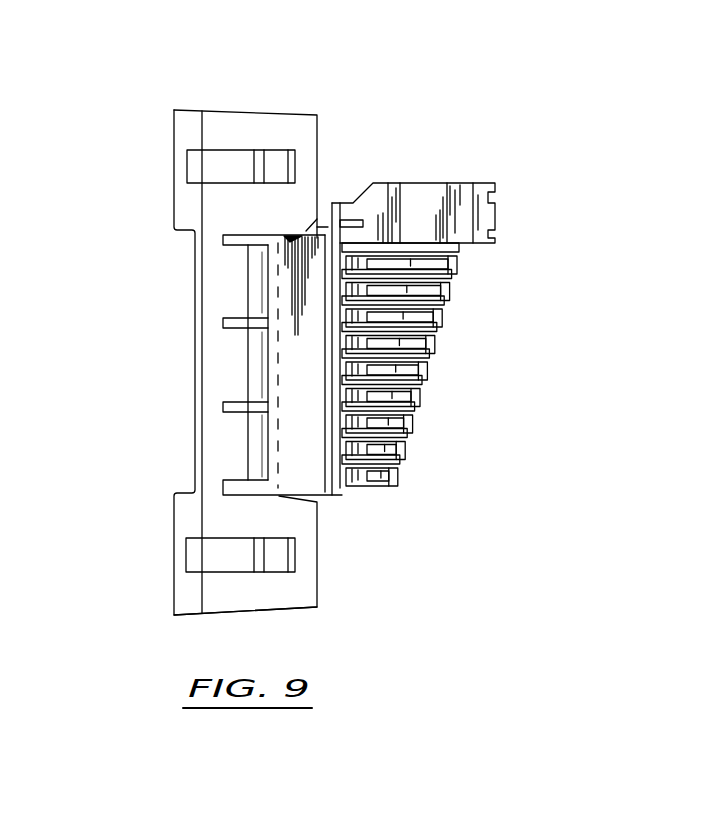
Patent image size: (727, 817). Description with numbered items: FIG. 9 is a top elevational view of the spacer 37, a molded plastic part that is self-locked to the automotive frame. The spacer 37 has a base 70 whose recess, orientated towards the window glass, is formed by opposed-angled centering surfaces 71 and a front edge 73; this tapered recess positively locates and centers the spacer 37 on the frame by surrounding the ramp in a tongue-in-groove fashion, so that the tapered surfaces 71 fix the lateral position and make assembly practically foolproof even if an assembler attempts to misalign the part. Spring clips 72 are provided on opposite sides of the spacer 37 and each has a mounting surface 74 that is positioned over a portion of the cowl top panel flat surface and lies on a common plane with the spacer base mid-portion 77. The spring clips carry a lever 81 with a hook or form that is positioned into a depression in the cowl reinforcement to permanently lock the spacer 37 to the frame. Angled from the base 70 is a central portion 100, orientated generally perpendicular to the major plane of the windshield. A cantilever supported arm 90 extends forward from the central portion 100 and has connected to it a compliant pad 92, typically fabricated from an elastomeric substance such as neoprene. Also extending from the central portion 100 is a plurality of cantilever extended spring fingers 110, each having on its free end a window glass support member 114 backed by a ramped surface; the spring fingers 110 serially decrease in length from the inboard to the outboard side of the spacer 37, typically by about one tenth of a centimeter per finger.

The spacer 37 is at (256, 96).
The base 70 is at (195, 260).
The spring clips 72 is at (318, 120).
The lever 81 is at (235, 559).
The mounting surface 74 is at (257, 603).
The centering surfaces 71 is at (312, 226).
The spacer base mid-portion 77 is at (220, 292).
The front edge 73 is at (277, 442).
The central portion 100 is at (300, 378).
The cantilever supported arm 90 is at (381, 183).
The compliant pad 92 is at (452, 185).
The spring fingers 110 is at (418, 273).
The window glass support member 114 is at (458, 266).